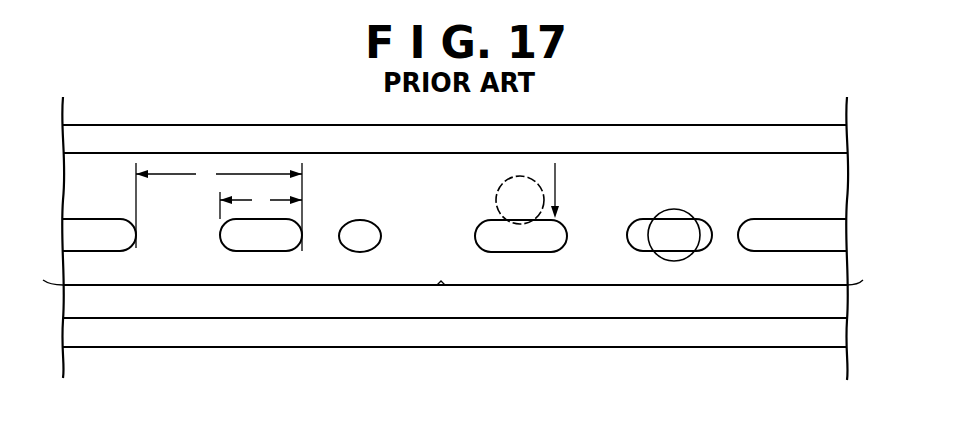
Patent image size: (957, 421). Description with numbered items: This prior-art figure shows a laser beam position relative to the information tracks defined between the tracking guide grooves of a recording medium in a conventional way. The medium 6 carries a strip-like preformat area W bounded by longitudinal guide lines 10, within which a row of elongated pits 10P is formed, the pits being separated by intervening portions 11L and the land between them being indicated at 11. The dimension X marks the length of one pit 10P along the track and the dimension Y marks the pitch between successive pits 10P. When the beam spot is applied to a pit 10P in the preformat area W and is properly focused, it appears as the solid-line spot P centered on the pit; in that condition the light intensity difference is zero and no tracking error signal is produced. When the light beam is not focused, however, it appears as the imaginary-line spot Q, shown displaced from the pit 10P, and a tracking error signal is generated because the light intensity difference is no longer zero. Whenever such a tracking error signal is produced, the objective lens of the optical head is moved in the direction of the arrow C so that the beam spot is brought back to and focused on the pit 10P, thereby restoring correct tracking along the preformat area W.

The lead frame strip 6 is at (863, 204).
The frame rail 10 is at (246, 132).
The pit 10P is at (283, 243).
The land portion 11 is at (423, 235).
The land between pilot holes 11L is at (184, 229).
The preformat area W is at (442, 300).
The pilot hole length X is at (261, 203).
The pilot hole pitch Y is at (219, 206).
The imaginary-line spot Q is at (510, 178).
The arrow C is at (566, 190).
The solid-line spot P is at (678, 212).